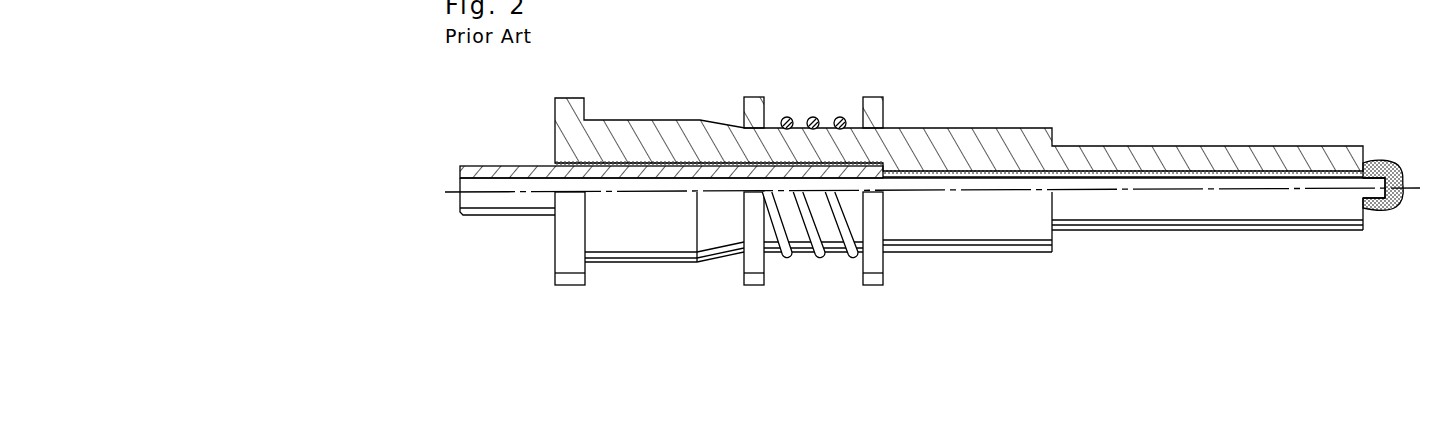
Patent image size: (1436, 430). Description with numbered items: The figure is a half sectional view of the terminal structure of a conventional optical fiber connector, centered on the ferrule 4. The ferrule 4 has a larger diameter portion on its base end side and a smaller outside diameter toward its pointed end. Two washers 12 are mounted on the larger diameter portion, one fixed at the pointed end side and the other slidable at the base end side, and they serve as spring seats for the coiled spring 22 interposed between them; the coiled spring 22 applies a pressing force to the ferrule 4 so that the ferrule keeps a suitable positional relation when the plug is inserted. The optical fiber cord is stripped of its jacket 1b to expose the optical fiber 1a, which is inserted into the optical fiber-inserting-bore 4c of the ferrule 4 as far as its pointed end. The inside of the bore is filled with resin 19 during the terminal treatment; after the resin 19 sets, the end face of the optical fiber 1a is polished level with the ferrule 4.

The optical fiber 1a is at (463, 181).
The jacket 1b is at (521, 167).
The ferrule 4 is at (1012, 128).
The optical fiber-inserting-bore 4c is at (1076, 170).
The washers 12 is at (752, 96).
The resin 19 is at (1388, 165).
The coiled spring 22 is at (791, 117).